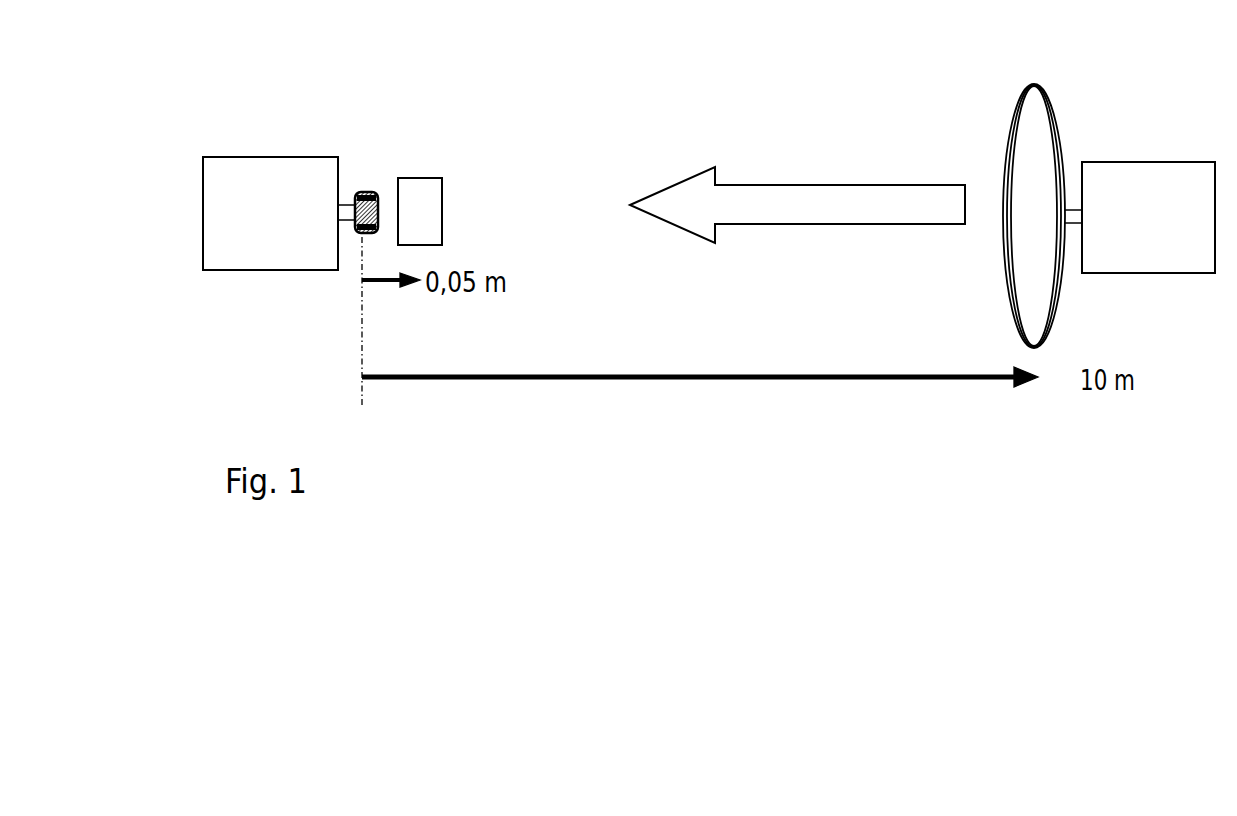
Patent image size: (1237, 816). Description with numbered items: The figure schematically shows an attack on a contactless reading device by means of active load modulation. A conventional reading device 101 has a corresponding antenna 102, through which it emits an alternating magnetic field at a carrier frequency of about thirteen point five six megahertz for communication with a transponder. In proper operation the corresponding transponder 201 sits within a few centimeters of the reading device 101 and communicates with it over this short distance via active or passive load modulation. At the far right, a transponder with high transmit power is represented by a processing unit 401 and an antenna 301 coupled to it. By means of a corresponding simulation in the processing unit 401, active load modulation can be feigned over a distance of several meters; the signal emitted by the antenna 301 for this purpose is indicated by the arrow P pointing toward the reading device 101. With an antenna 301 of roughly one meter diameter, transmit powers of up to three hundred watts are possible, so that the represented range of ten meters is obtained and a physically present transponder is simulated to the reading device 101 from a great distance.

The reading device 101 is at (278, 167).
The antenna 102 is at (363, 187).
The transponder 201 is at (410, 177).
The antenna 301 is at (1013, 118).
The processing unit 401 is at (1183, 160).
The arrow P is at (766, 183).